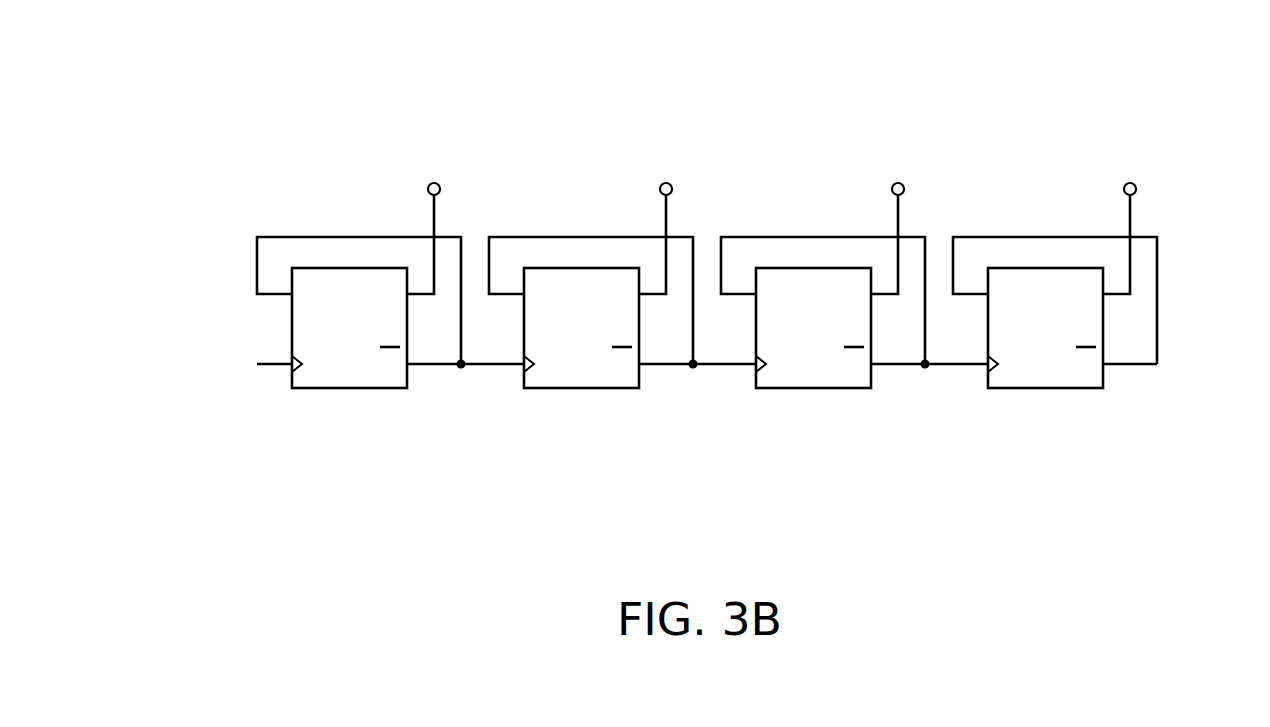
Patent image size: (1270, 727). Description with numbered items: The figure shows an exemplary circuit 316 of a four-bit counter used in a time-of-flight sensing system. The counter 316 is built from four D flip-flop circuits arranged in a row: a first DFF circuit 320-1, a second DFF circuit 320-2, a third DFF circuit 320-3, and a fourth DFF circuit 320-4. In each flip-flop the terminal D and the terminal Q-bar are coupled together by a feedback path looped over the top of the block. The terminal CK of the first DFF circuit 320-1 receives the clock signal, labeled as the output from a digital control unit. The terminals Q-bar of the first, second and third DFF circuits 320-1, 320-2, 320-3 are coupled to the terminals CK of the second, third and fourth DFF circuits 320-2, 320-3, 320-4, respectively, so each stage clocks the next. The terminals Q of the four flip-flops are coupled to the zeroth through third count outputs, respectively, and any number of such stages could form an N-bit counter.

The circuit of a 4-bit counter 316 is at (1154, 83).
The first DFF circuit FF0 320-1 is at (350, 388).
The second DFF circuit FF1 320-2 is at (582, 388).
The third DFF circuit FF2 320-3 is at (814, 388).
The fourth DFF circuit FF3 320-4 is at (1046, 388).